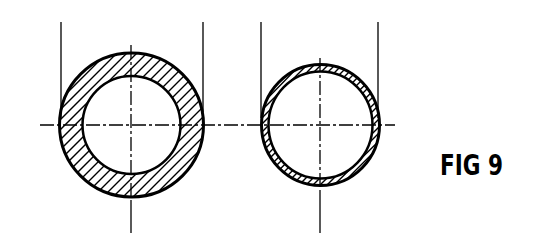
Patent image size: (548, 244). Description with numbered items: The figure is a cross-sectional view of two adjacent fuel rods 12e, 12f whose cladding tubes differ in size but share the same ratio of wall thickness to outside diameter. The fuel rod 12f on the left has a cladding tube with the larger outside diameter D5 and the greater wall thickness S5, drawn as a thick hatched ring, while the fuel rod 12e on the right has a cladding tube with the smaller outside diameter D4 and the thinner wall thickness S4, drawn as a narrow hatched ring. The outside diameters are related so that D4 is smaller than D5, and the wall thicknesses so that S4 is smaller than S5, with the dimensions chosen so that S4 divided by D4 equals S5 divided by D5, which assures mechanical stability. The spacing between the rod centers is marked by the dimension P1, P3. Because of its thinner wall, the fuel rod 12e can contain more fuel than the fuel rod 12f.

The fuel rod 12f is at (68, 88).
The fuel rod 12e is at (377, 107).
The cladding tube wall thickness S5 is at (143, 138).
The cladding tube wall thickness S4 is at (335, 140).
The outside diameter D5 is at (203, 30).
The outside diameter D4 is at (378, 30).
The pitch distance between tube centers P1 is at (131, 226).
The pitch distance between tube centers P3 is at (320, 226).